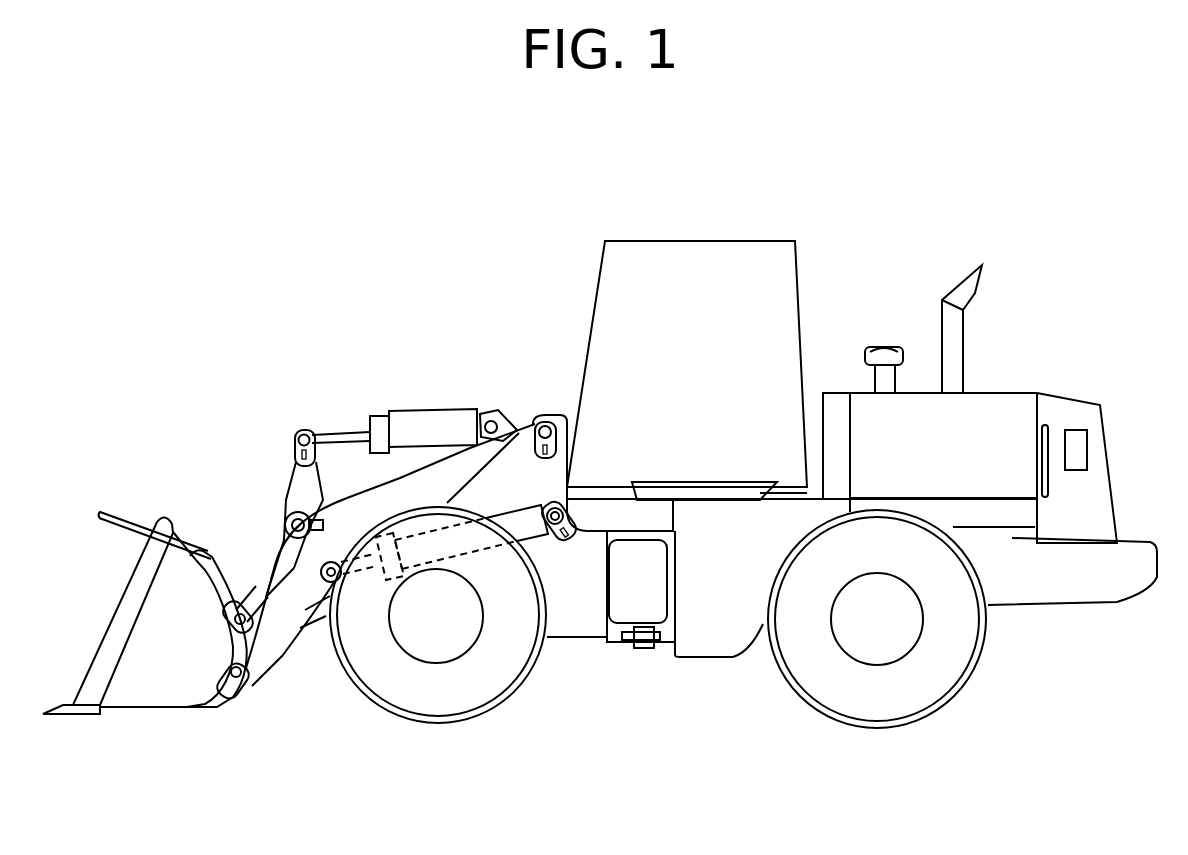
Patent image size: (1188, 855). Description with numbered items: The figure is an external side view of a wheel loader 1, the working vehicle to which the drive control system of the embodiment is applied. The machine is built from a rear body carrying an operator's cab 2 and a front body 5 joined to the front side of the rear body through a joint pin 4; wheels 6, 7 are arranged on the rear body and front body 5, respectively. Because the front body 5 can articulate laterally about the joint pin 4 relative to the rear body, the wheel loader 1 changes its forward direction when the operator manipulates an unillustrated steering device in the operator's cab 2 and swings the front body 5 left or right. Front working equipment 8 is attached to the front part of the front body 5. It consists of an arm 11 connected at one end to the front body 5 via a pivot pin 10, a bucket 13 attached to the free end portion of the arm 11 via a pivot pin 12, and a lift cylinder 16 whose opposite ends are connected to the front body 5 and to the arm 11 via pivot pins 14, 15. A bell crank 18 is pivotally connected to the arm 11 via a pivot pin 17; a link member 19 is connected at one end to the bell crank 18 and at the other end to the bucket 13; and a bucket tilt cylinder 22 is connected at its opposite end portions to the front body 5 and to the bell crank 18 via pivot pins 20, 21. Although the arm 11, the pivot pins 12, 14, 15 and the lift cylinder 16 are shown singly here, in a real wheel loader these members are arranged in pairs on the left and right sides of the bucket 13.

The wheel loader 1 is at (1050, 627).
The operator's cab 2 is at (653, 262).
The joint pin 4 is at (645, 650).
The front body 5 is at (523, 432).
The wheel 6 is at (883, 700).
The wheel 7 is at (437, 700).
The front working equipment 8 is at (340, 422).
The pivot pin 10 is at (545, 422).
The arm 11 is at (263, 587).
The pivot pin 12 is at (236, 690).
The bucket 13 is at (140, 535).
The pivot pin 14 is at (557, 540).
The pivot pin 15 is at (302, 628).
The lift cylinder 16 is at (340, 585).
The pivot pin 17 is at (297, 482).
The bell crank 18 is at (298, 512).
The link member 19 is at (231, 603).
The pivot pin 20 is at (489, 420).
The pivot pin 21 is at (303, 430).
The bucket tilt cylinder 22 is at (427, 409).